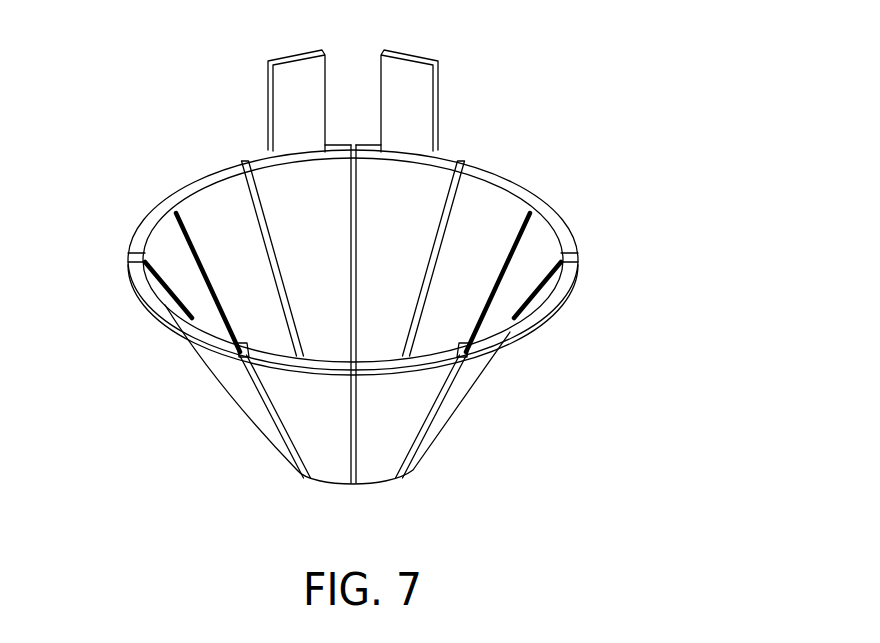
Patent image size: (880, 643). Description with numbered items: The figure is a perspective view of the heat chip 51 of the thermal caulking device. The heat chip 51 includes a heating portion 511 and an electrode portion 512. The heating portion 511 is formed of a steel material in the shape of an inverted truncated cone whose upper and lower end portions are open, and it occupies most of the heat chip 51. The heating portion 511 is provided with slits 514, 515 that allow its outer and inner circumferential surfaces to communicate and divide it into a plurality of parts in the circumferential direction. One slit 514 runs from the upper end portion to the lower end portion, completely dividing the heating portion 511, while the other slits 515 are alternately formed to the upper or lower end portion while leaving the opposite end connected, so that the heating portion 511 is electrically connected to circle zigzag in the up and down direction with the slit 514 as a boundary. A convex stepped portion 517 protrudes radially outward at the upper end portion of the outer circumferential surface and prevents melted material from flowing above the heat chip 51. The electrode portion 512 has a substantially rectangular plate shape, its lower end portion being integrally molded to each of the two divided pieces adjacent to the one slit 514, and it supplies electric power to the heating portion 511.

The heat chip 51 is at (630, 163).
The heating portion 511 is at (590, 226).
The electrode portion 512 is at (297, 52).
The slit 514 is at (357, 247).
The slits 515 is at (267, 240).
The stepped portion 517 is at (142, 308).